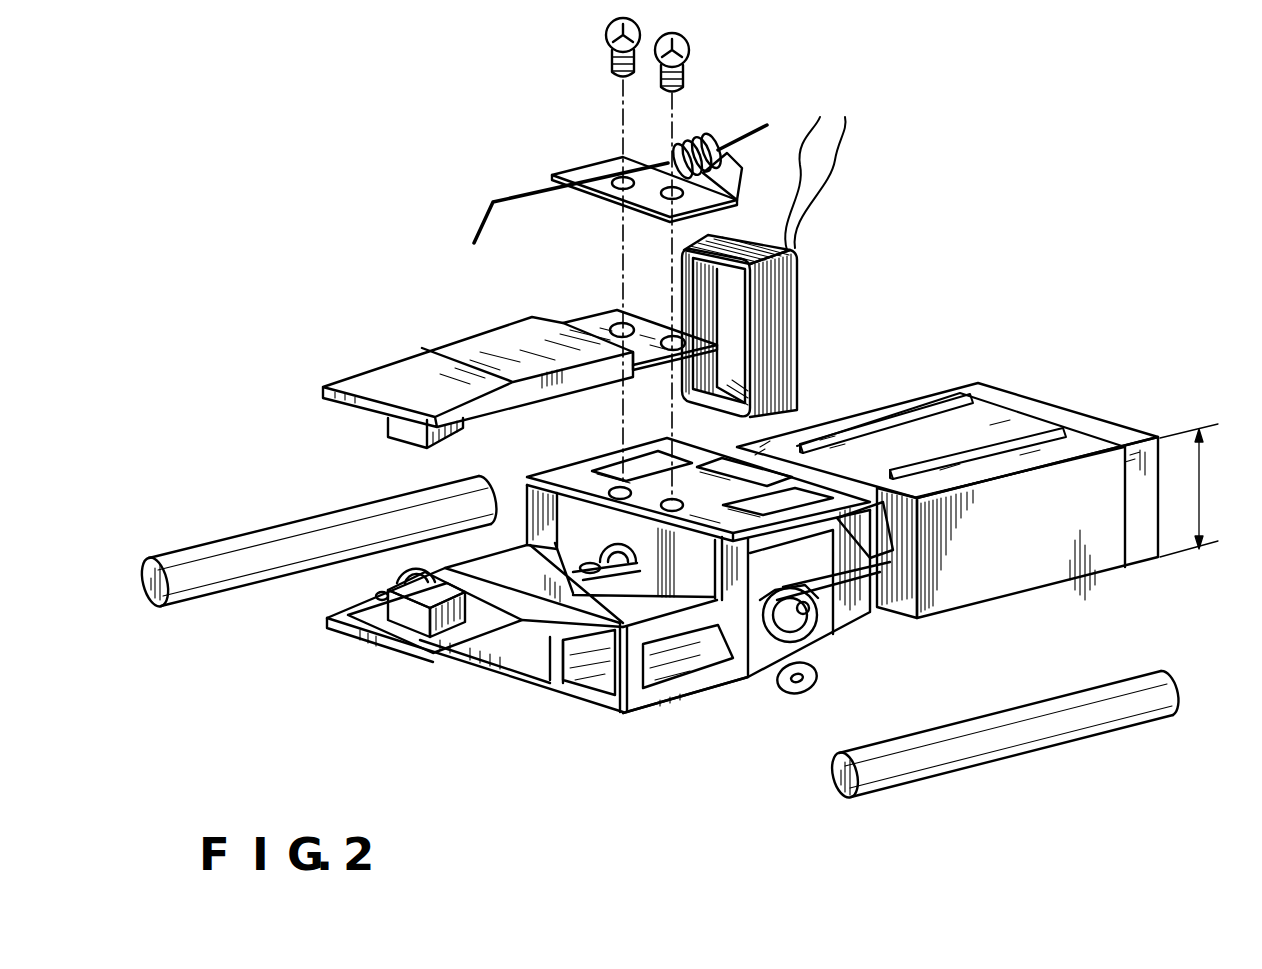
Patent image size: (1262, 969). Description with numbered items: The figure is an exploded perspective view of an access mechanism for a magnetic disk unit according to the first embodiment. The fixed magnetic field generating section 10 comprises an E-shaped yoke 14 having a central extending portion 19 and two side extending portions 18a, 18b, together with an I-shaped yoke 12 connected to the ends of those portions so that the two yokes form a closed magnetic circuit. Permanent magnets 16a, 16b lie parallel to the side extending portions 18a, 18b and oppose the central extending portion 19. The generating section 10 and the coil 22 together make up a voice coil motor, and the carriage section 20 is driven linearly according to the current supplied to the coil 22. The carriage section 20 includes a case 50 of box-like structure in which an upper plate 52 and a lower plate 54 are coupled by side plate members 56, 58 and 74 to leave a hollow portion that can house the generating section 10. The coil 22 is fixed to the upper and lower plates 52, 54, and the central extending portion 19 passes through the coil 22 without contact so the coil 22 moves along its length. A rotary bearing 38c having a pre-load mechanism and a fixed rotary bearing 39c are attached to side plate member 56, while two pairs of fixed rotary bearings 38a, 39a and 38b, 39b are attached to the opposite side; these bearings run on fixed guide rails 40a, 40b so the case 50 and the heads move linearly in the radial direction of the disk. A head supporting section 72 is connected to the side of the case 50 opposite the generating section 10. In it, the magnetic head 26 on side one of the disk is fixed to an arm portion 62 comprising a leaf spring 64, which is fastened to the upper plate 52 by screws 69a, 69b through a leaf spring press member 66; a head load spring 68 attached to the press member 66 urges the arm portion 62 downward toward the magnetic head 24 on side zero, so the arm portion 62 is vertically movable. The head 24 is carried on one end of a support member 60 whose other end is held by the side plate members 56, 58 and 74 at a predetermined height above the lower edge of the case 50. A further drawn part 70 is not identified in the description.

The magnetic field generating section 10 is at (989, 500).
The I-shaped yoke 12 is at (1053, 413).
The E-shaped yoke 14 is at (1045, 586).
The permanent magnet 16a is at (917, 417).
The permanent magnet 16b is at (1082, 435).
The side extending portion 18a is at (851, 420).
The side extending portion 18b is at (1121, 470).
The central extending portion 19 is at (999, 427).
The carriage section 20 is at (675, 752).
The coil 22 is at (796, 300).
The magnetic head 24 is at (405, 605).
The magnetic head 26 is at (390, 431).
The fixed rotary bearing 38a is at (616, 525).
The fixed rotary bearing 38b is at (396, 572).
The rotary bearing having a pre-load mechanism 38c is at (838, 640).
The fixed rotary bearing 39a is at (590, 557).
The fixed rotary bearing 39b is at (375, 598).
The fixed rotary bearing 39c is at (819, 683).
The guide rail 40a is at (233, 543).
The guide rail 40b is at (1036, 745).
The case 50 is at (628, 607).
The upper plate 52 is at (556, 470).
The lower plate 54 is at (592, 700).
The side plate member 56 is at (700, 620).
The side plate member 58 is at (527, 503).
The support member 60 is at (461, 652).
The arm portion 62 is at (392, 368).
The leaf spring 64 is at (594, 320).
The leaf spring press member 66 is at (592, 167).
The head load spring 68 is at (522, 197).
The screw 69a is at (606, 40).
The screw 69b is at (690, 48).
The support ledge 70 is at (534, 547).
The head supporting section 72 is at (375, 690).
The side plate member 74 is at (548, 678).